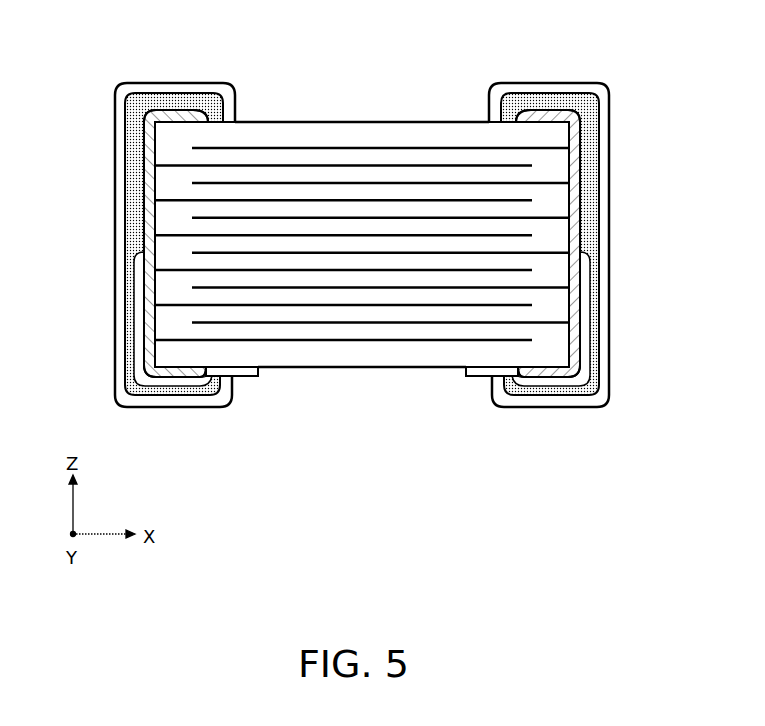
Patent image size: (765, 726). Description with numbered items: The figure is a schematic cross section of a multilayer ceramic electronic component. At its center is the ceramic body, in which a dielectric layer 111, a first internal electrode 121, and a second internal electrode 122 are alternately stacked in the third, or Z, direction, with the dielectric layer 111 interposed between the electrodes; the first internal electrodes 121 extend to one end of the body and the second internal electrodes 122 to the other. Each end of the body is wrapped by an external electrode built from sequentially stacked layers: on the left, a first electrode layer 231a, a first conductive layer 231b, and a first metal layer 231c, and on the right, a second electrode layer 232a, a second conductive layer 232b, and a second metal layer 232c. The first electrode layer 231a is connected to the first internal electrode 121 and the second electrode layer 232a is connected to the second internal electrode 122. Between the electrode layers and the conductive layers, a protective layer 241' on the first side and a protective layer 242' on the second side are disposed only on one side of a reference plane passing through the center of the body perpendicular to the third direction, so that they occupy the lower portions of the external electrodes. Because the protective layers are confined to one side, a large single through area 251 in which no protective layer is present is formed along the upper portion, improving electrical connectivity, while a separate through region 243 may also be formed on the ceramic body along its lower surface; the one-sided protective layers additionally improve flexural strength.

The dielectric layer 111 is at (198, 225).
The first internal electrode 121 is at (166, 168).
The second internal electrode 122 is at (192, 148).
The first electrode layer of first external electrode 231a is at (153, 262).
The second electrode layer of first external electrode 231b is at (128, 308).
The third electrode layer of first external electrode 231c is at (120, 355).
The first electrode layer of second external electrode 232a is at (577, 131).
The second electrode layer of second external electrode 232b is at (596, 165).
The third electrode layer of second external electrode 232c is at (604, 203).
The protective layer 241' is at (173, 351).
The protective layer 242' is at (594, 319).
The single through area 251 is at (352, 112).
The separate through region 243 is at (362, 372).